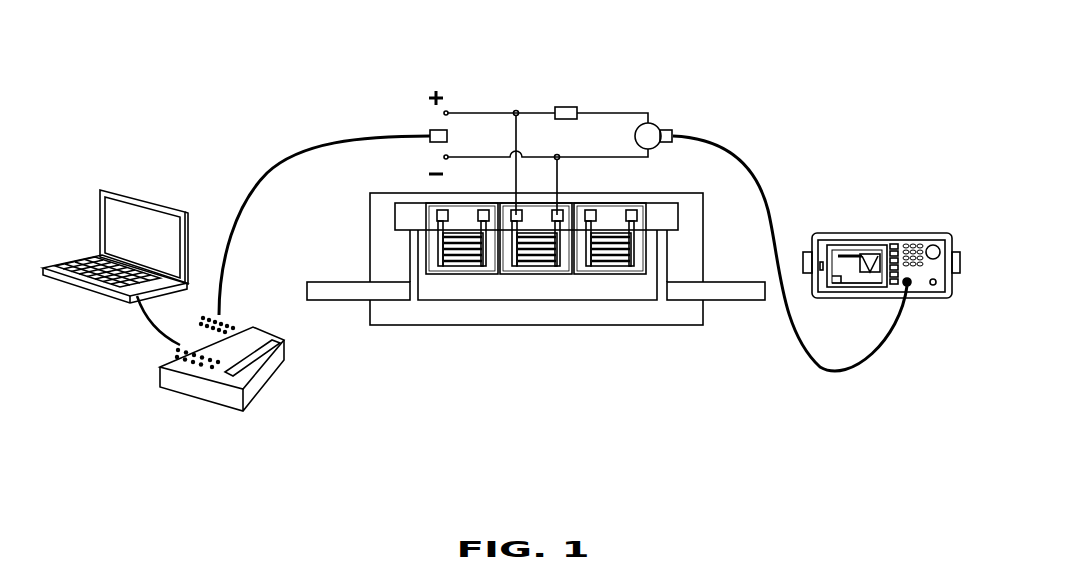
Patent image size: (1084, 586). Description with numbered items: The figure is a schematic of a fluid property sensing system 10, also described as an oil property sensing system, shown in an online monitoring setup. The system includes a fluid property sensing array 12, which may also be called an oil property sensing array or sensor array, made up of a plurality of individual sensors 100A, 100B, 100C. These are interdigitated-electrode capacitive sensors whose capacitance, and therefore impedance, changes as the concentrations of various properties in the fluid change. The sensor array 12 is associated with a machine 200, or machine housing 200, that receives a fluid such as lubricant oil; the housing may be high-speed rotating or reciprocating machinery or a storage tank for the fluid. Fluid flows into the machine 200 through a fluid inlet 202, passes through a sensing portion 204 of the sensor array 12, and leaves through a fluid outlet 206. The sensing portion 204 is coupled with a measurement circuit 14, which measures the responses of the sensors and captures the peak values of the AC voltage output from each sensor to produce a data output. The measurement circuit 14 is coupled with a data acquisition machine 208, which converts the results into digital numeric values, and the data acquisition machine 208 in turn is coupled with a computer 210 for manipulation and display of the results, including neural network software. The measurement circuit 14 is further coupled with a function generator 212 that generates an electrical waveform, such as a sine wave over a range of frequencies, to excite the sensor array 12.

The fluid property sensing system 10 is at (294, 98).
The fluid property sensing array 12 is at (578, 162).
The measurement circuit 14 is at (650, 96).
The sensor 100A is at (463, 266).
The sensor 100B is at (537, 266).
The sensor 100C is at (607, 266).
The machine housing 200 is at (370, 210).
The fluid inlet 202 is at (323, 292).
The sensing portion 204 is at (417, 217).
The fluid outlet 206 is at (742, 293).
The data acquisition machine 208 is at (207, 393).
The computer 210 is at (122, 220).
The function generator 212 is at (855, 233).